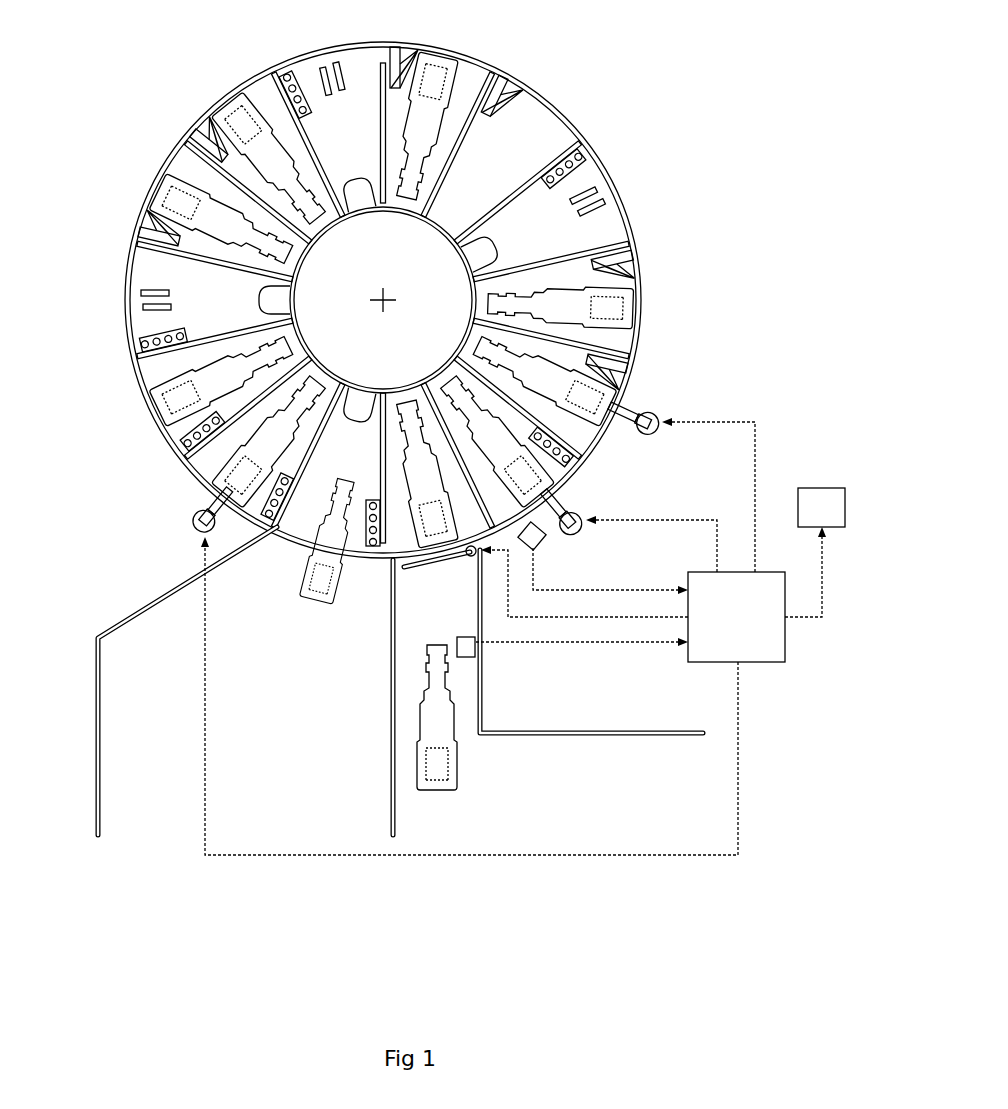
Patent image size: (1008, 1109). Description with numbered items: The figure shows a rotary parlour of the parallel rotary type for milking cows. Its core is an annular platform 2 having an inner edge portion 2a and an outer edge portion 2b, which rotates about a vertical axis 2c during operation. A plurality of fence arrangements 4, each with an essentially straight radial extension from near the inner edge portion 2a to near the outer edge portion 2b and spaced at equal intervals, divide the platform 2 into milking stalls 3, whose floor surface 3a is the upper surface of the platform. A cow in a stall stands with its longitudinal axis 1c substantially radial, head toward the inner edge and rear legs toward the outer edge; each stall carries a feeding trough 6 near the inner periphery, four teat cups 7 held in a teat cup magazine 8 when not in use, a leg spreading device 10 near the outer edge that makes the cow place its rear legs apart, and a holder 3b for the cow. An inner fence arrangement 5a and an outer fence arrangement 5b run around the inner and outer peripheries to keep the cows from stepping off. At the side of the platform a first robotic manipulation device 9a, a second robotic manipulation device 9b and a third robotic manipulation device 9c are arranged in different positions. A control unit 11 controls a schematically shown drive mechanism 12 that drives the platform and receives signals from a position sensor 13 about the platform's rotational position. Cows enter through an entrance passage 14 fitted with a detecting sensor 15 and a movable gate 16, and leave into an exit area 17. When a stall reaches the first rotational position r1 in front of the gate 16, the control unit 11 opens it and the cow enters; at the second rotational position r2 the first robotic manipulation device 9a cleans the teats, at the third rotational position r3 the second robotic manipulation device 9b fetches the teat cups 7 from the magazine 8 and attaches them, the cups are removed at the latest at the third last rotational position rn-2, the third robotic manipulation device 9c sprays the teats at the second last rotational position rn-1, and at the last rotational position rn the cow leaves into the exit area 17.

The longitudinal axis of the cow 1c is at (456, 50).
The annular platform 2 is at (548, 136).
The inner edge portion 2a is at (436, 386).
The outer edge portion 2b is at (642, 318).
The vertical axis 2c is at (378, 296).
The milking stall 3 is at (217, 186).
The floor surface 3a is at (595, 230).
The container holder 3b is at (232, 110).
The fence arrangement 4 is at (163, 248).
The inner fence arrangement 5a is at (322, 366).
The outer fence arrangement 5b is at (615, 185).
The feeding trough 6 is at (483, 259).
The teat cup 7 is at (303, 108).
The teat cup magazine 8 is at (288, 70).
The first robotic manipulation device 9a is at (556, 516).
The second robotic manipulation device 9b is at (636, 402).
The third robotic manipulation device 9c is at (215, 508).
The leg spreading device 10 is at (338, 60).
The control unit 11 is at (718, 642).
The drive mechanism 12 is at (822, 505).
The position sensor 13 is at (536, 542).
The entrance passage 14 is at (458, 677).
The detecting sensor 15 is at (476, 646).
The movable gate 16 is at (427, 557).
The exit area 17 is at (306, 731).
The first rotational position r1 is at (457, 522).
The second rotational position r2 is at (502, 498).
The third rotational position r3 is at (573, 427).
The last rotational position rn is at (358, 540).
The second last rotational position rn-1 is at (217, 465).
The third last rotational position rn-2 is at (160, 371).